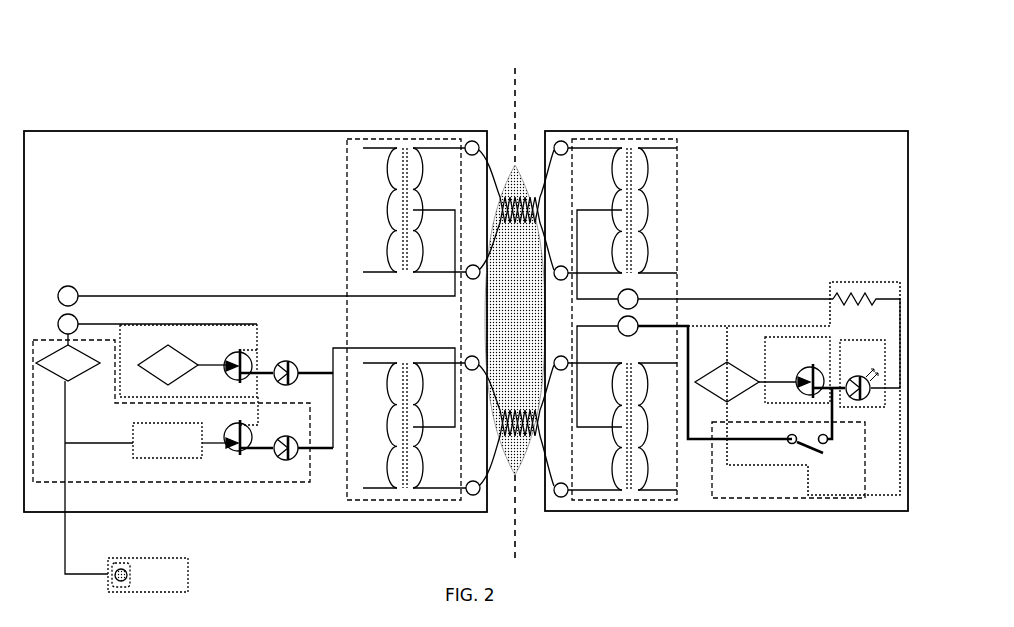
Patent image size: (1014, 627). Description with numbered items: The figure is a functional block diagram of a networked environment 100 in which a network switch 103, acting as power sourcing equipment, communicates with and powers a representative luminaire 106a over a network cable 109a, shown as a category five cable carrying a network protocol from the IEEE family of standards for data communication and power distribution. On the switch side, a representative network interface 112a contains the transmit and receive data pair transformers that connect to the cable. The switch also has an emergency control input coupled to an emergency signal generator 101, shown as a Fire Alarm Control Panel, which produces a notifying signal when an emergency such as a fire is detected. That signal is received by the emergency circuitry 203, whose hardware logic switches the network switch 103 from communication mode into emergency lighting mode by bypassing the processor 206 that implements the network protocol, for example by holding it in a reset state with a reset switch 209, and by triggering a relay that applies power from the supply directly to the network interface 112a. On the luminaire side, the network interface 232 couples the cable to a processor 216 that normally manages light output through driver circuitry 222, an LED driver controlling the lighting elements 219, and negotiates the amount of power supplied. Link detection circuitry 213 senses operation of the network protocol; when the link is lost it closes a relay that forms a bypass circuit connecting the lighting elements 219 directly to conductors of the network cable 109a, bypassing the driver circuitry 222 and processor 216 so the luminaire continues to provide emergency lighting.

The networked environment 100 is at (376, 44).
The network switch 103 is at (255, 361).
The luminaire 106a is at (726, 321).
The network cable 109a is at (516, 318).
The network interface 112a is at (406, 319).
The emergency circuitry 203 is at (199, 449).
The processor 206 is at (152, 361).
The reset switch 209 is at (48, 368).
The processor 216 is at (721, 372).
The driver circuitry 222 is at (763, 366).
The lighting elements 219 is at (851, 341).
The link detection circuitry 213 is at (866, 469).
The network interface 232 is at (676, 294).
The emergency signal generator 101 is at (188, 576).